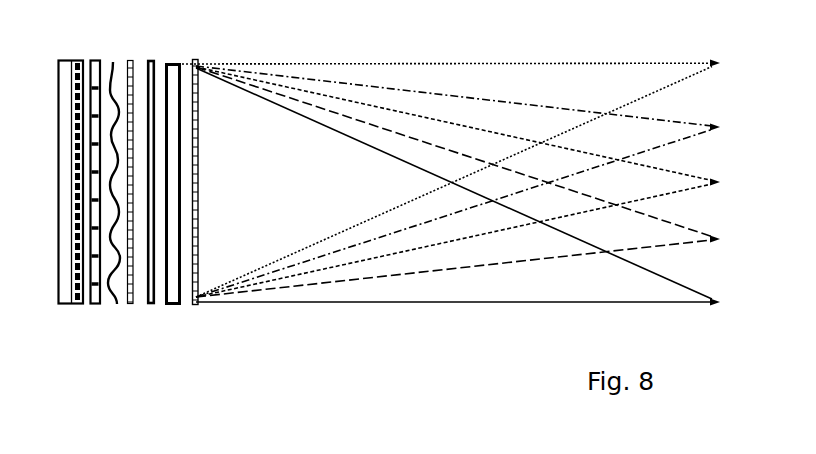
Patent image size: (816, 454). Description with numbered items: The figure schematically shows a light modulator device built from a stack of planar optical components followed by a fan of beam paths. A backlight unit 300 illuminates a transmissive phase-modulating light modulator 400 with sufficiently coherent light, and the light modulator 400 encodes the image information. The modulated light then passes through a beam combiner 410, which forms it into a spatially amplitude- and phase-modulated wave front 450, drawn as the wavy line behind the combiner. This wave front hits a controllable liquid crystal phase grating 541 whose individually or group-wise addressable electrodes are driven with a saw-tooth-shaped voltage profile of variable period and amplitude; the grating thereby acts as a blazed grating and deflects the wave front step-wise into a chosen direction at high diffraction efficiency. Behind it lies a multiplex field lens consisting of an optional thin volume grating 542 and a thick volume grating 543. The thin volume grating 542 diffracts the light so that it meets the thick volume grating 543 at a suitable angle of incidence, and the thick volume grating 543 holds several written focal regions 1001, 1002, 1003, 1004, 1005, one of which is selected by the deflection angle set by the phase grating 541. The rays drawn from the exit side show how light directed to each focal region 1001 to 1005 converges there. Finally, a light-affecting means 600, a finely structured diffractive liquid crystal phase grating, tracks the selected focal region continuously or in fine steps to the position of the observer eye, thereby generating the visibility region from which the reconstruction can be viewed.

The backlight unit 300 is at (65, 60).
The transmissive phase-modulating light modulator 400 is at (77, 305).
The beam combiner 410 is at (96, 60).
The spatially amplitude- and phase-modulated wave front 450 is at (118, 306).
The controllable liquid crystal phase grating 541 is at (130, 305).
The thin volume grating 542 is at (150, 60).
The thick volume grating 543 is at (173, 305).
The light-affecting means 600 is at (194, 59).
The focal region 1001 is at (722, 64).
The focal region 1002 is at (722, 128).
The focal region 1003 is at (722, 183).
The focal region 1004 is at (722, 240).
The focal region 1005 is at (722, 303).